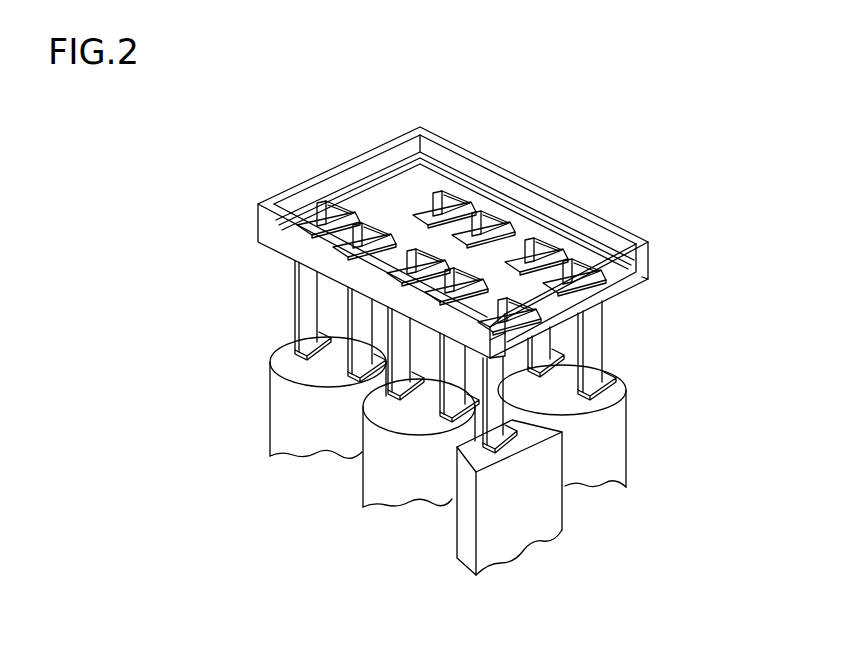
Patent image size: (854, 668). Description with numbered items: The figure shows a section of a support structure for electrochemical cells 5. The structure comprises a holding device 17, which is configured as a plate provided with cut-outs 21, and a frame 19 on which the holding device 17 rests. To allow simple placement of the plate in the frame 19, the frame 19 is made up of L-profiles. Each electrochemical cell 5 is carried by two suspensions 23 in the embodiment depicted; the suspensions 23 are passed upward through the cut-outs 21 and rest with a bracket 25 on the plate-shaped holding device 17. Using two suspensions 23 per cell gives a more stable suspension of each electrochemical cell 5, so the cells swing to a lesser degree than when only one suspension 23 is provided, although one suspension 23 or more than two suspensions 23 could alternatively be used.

The electrochemical cell 5 is at (612, 423).
The holding device 17 is at (575, 193).
The frame 19 is at (637, 233).
The cut-out 21 is at (424, 200).
The suspension 23 is at (600, 327).
The bracket 25 is at (503, 247).